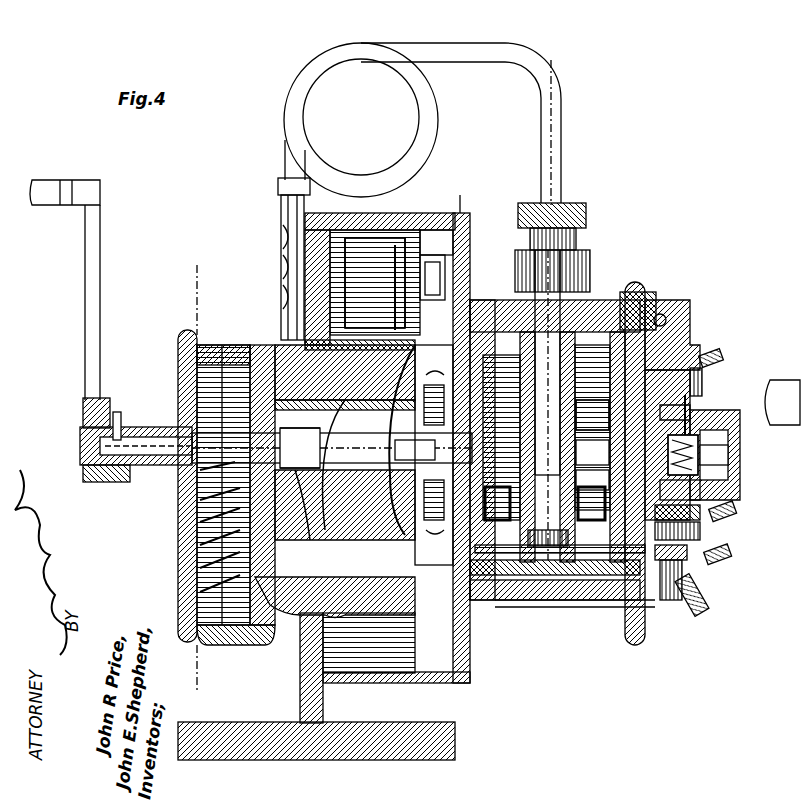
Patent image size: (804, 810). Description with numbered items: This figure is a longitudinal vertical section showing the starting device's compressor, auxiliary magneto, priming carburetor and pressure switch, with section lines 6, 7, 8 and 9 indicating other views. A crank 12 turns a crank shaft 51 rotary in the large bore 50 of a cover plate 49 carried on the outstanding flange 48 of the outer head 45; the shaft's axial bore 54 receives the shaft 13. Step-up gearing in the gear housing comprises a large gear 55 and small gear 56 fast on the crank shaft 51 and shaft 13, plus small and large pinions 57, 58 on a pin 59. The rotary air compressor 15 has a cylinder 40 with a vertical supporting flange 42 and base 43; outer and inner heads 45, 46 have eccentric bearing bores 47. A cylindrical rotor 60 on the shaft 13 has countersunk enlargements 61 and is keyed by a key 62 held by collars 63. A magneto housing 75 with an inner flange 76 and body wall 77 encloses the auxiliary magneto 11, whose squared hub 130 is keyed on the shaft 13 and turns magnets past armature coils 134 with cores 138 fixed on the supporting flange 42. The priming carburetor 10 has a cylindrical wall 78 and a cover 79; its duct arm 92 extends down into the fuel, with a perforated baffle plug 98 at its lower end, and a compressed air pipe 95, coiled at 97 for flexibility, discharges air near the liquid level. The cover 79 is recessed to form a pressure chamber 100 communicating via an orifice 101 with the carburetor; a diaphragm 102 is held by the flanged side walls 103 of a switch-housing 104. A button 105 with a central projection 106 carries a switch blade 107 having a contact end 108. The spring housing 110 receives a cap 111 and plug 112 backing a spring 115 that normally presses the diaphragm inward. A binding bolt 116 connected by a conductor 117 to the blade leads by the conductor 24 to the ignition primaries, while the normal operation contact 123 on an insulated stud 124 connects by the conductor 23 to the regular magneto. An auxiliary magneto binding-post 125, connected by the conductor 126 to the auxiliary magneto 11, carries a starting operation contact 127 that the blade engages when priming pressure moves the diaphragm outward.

The section line 6 / left wall 6 is at (348, 213).
The section line 7 is at (165, 292).
The section line 8 is at (455, 700).
The fluid pipe fitting 9 is at (600, 71).
The priming carburetor 10 is at (605, 610).
The auxiliary magneto 11 is at (432, 222).
The crank 12 is at (100, 272).
The shaft 13 is at (140, 430).
The rotary air compressor 15 is at (258, 640).
The conductor 23 is at (712, 608).
The conductor 24 is at (712, 356).
The cylinder 40 is at (302, 650).
The supporting flange 42 is at (280, 233).
The base 43 is at (420, 760).
The outer head 45 is at (262, 342).
The inner head 46 is at (410, 378).
The bearing bores 47 is at (415, 392).
The outstanding flange 48 is at (226, 342).
The cover plate 49 is at (178, 349).
The bore 50 is at (192, 424).
The crank shaft 51 is at (200, 470).
The axial bore 54 is at (82, 468).
The large gear 55 is at (200, 500).
The small gear 56 is at (200, 522).
The small pinion 57 is at (200, 545).
The large pinion 58 is at (200, 568).
The pin 59 is at (200, 592).
The cylindrical rotor 60 is at (392, 556).
The countersunk enlargements 61 is at (400, 520).
The key 62 is at (395, 540).
The collars 63 is at (455, 330).
The magneto housing 75 is at (472, 228).
The inner flange 76 is at (388, 232).
The body wall 77 is at (476, 290).
The cylindrical wall 78 is at (588, 603).
The cover 79 is at (640, 292).
The arm 92 is at (547, 405).
The compressed air pipe 95 is at (460, 50).
The coil 97 is at (312, 85).
The perforated baffle plug 98 is at (512, 580).
The pressure chamber 100 is at (628, 450).
The orifice 101 is at (625, 428).
The diaphragm 102 is at (650, 312).
The flanged side walls 103 is at (672, 352).
The switch-housing 104 is at (717, 347).
The button 105 is at (630, 470).
The central projection 106 is at (735, 478).
The switch blade 107 is at (700, 400).
The contact end 108 is at (702, 512).
The spring housing 110 is at (698, 418).
The cap 111 is at (738, 422).
The plug 112 is at (705, 455).
The spring 115 is at (712, 462).
The binding bolt 116 is at (703, 380).
The conductor 117 is at (620, 385).
The normal operation contact 123 is at (568, 540).
The insulated stud 124 is at (672, 600).
The auxiliary magneto binding-post 125 is at (702, 531).
The conductor 126 is at (732, 558).
The starting operation contact 127 is at (740, 524).
The squared hub 130 is at (540, 458).
The armature coils 134 is at (395, 248).
The cores 138 is at (438, 277).